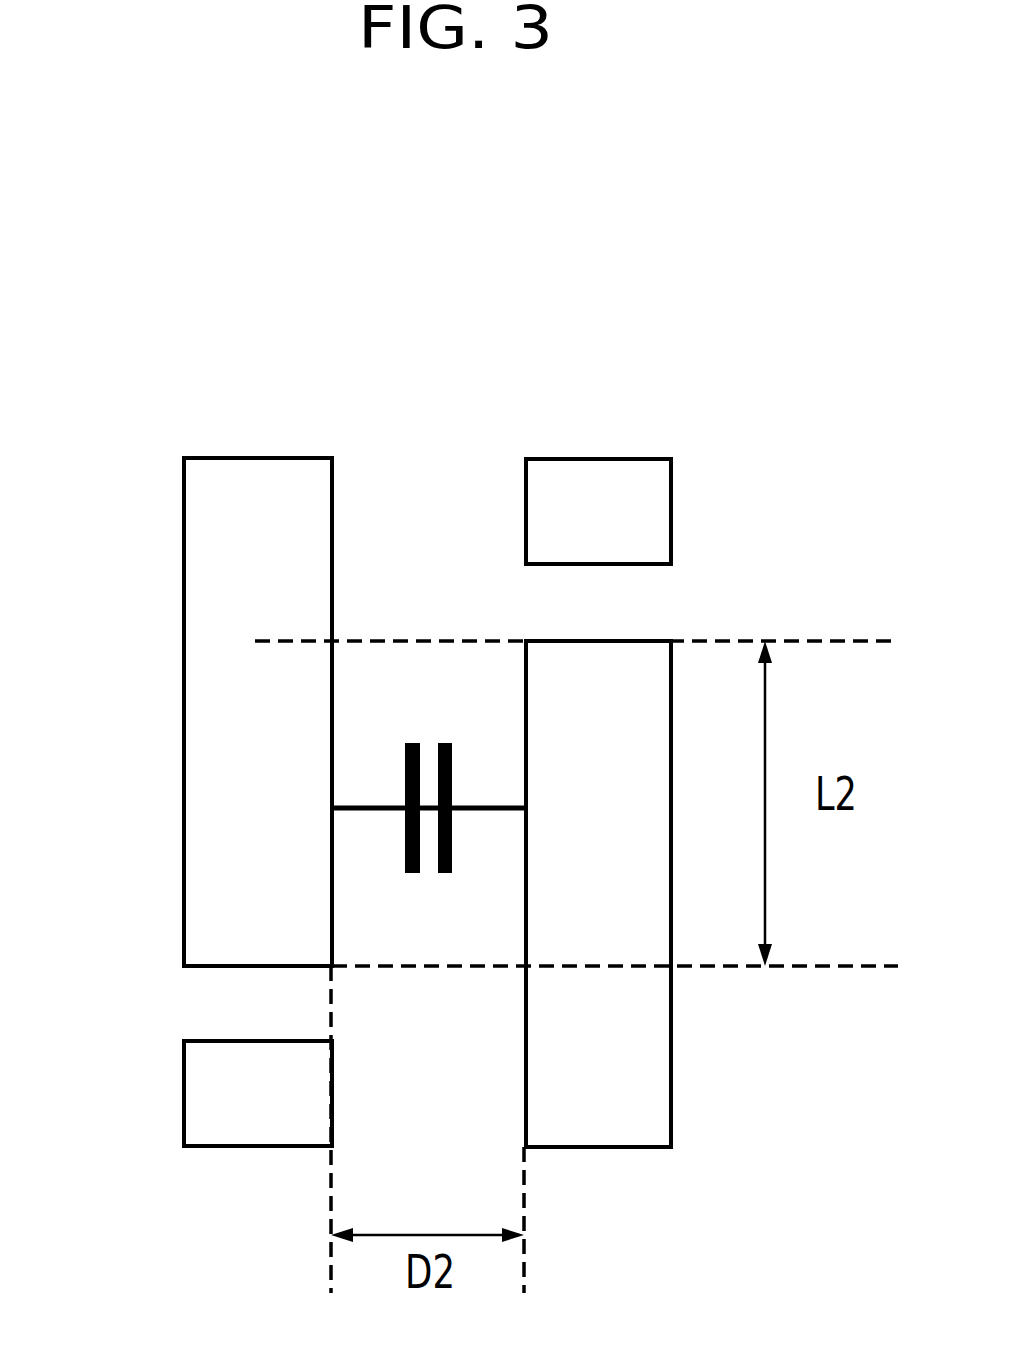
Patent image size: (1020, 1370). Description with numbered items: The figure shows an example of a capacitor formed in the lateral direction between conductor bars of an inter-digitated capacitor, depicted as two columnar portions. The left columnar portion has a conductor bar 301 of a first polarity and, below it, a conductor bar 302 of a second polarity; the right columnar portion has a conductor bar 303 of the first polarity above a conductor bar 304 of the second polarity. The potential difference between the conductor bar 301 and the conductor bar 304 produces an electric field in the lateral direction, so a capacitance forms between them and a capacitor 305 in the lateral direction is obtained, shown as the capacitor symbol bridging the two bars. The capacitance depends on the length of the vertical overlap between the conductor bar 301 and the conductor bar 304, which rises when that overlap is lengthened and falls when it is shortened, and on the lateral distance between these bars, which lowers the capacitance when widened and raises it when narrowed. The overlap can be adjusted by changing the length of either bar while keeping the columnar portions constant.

The conductor bar 301 is at (183, 740).
The conductor bar 302 is at (183, 1100).
The conductor bar 303 is at (672, 517).
The conductor bar 304 is at (672, 1093).
The capacitor 305 is at (432, 738).